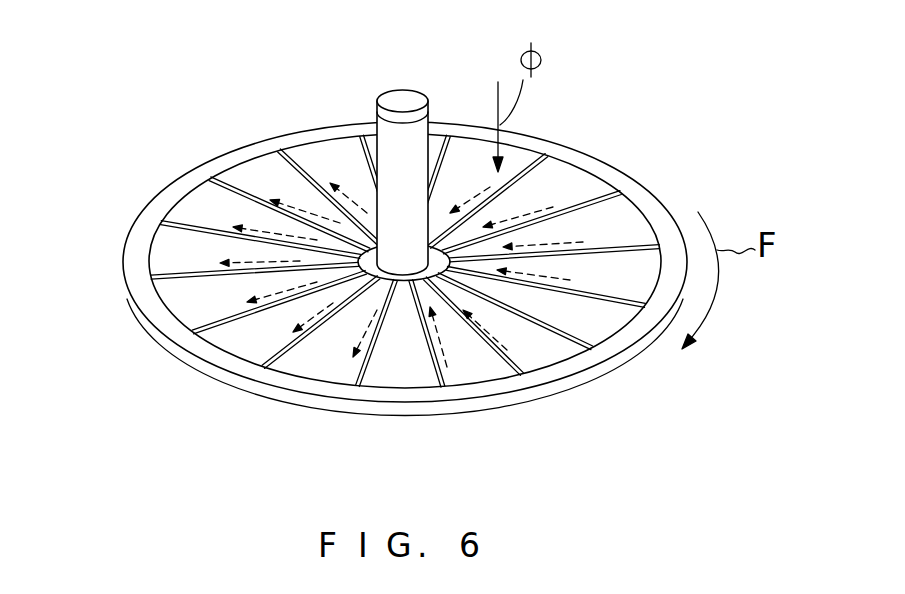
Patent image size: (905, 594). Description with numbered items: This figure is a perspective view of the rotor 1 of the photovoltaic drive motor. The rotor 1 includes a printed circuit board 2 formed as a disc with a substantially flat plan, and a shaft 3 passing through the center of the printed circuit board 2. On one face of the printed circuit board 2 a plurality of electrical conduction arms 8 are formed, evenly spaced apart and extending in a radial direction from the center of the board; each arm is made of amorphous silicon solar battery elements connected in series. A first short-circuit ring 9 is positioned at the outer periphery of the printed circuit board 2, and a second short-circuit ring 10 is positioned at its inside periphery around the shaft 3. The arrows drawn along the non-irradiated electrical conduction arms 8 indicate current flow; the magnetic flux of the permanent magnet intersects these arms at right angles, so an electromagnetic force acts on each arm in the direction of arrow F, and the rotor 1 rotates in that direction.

The rotor 1 is at (374, 248).
The printed circuit board 2 is at (180, 305).
The shaft 3 is at (405, 97).
The electrical conduction arms 8 is at (190, 227).
The first short-circuit ring 9 is at (138, 247).
The second short-circuit ring 10 is at (412, 281).